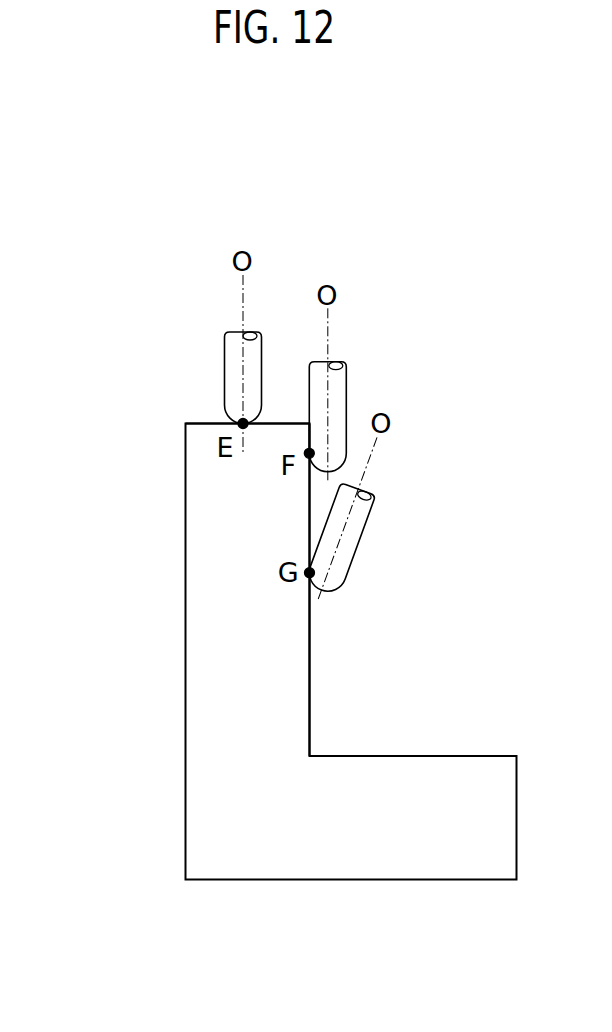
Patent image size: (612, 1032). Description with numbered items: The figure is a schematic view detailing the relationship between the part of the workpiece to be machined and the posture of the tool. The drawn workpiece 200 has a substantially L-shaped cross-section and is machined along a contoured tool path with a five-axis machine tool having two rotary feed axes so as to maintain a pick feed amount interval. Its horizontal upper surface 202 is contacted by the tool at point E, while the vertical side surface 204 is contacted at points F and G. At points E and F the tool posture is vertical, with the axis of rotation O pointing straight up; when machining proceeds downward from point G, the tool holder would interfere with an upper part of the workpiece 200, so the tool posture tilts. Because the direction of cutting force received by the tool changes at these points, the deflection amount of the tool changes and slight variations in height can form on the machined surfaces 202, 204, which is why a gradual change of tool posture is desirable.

The workpiece 200 is at (220, 621).
The horizontal upper surface 202 is at (200, 423).
The side surface of workpiece 204 is at (310, 683).